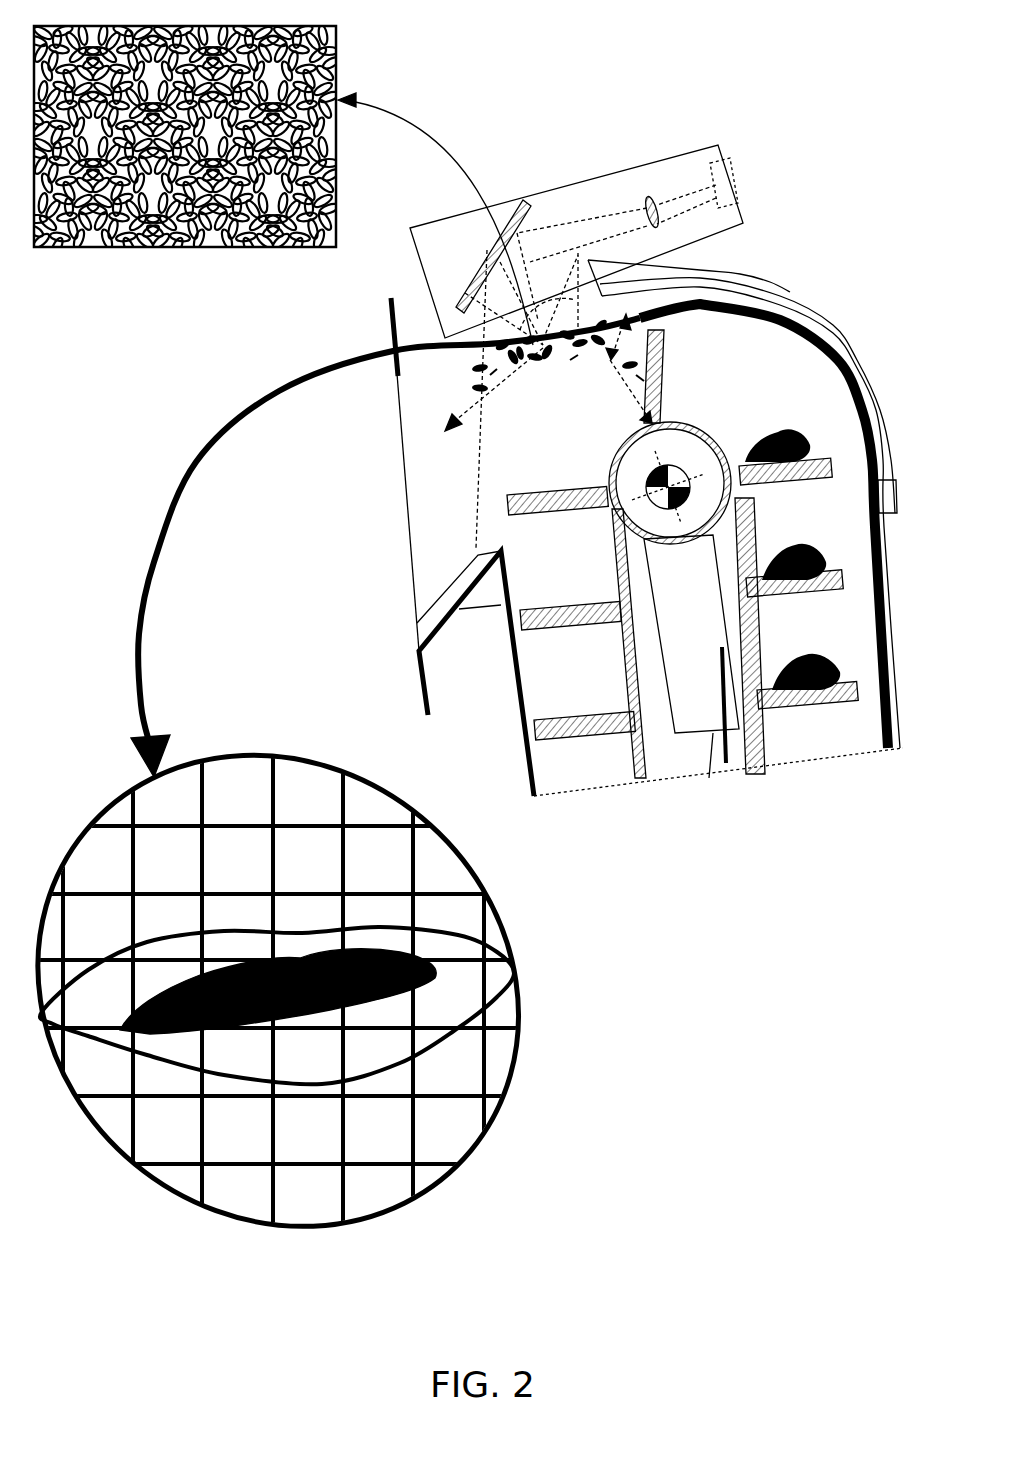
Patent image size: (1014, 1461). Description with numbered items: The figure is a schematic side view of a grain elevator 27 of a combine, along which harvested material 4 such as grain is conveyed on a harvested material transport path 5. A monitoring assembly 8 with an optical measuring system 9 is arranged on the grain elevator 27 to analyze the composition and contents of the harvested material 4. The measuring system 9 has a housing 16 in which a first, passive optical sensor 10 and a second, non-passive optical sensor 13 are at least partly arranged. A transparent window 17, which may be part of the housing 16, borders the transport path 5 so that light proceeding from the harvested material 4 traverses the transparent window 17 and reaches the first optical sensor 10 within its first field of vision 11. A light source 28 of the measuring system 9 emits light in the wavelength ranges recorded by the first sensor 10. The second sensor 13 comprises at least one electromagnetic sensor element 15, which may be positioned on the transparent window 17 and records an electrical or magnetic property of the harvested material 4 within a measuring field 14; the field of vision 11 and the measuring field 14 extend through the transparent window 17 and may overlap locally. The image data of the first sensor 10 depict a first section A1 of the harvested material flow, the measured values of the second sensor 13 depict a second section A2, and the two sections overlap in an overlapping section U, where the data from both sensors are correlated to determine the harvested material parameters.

The harvested material 4 is at (448, 387).
The harvested material transport path 5 is at (446, 415).
The monitoring assembly 8 is at (642, 305).
The optical measuring system 9 is at (642, 305).
The first passive optical sensor 10 is at (794, 175).
The second non-passive optical sensor 13 is at (736, 180).
The first field of vision 11 is at (576, 547).
The measuring field 14 is at (523, 441).
The electromagnetic sensor element 15 is at (48, 862).
The housing 16 is at (554, 190).
The transparent window 17 is at (607, 276).
The grain elevator 27 is at (800, 272).
The light source 28 is at (456, 290).
The first section A1 is at (183, 180).
The second section A2 is at (183, 180).
The overlapping section U is at (130, 250).